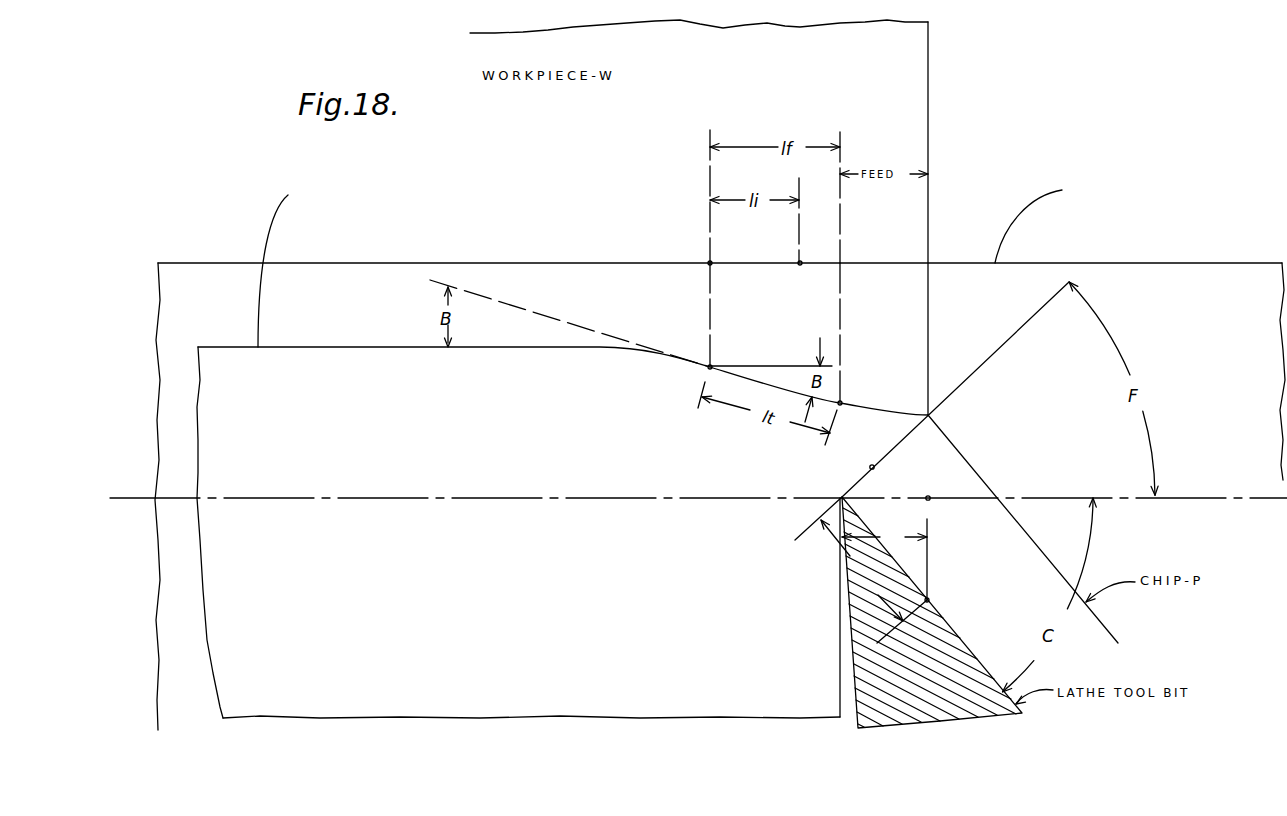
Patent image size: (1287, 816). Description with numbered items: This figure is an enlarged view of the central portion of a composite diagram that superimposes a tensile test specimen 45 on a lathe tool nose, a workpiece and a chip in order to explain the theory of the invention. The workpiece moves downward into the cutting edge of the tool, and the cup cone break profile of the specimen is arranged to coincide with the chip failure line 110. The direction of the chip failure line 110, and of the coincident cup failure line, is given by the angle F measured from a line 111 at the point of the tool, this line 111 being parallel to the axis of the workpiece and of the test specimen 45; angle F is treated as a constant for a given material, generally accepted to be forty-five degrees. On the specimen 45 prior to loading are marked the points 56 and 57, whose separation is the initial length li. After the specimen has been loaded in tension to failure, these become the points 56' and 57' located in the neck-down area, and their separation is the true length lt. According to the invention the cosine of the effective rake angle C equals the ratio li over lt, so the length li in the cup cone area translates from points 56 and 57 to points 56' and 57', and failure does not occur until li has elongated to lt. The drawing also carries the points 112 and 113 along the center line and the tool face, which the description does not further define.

The tensile test specimen 45 is at (350, 322).
The point 56 is at (684, 249).
The point 57 is at (811, 239).
The point 56' is at (672, 332).
The point 57' is at (859, 352).
The chip failure line 110 is at (870, 467).
The line 111 is at (840, 498).
The point on center line 112 is at (930, 496).
The point on lathe tool bit face 113 is at (929, 599).